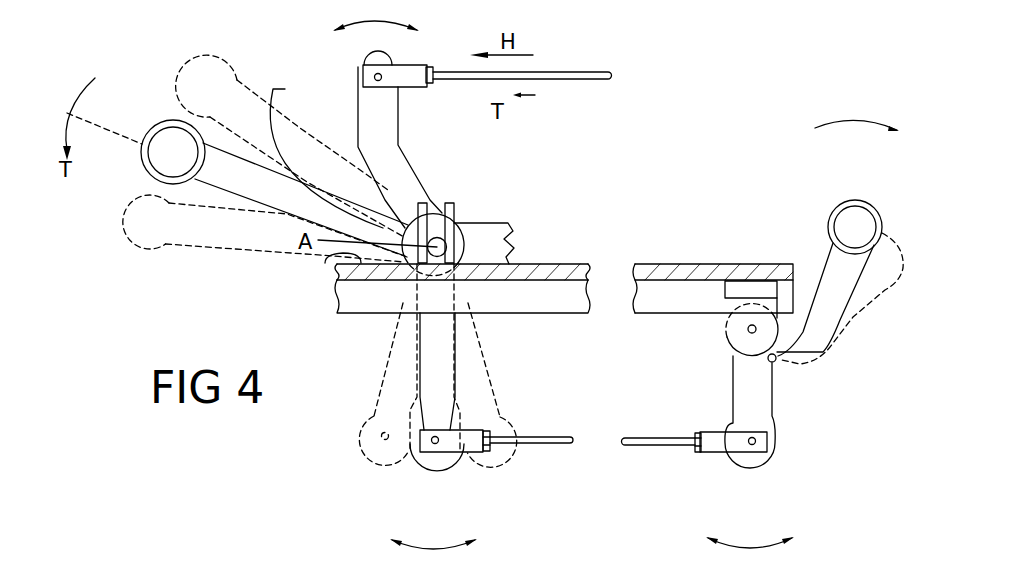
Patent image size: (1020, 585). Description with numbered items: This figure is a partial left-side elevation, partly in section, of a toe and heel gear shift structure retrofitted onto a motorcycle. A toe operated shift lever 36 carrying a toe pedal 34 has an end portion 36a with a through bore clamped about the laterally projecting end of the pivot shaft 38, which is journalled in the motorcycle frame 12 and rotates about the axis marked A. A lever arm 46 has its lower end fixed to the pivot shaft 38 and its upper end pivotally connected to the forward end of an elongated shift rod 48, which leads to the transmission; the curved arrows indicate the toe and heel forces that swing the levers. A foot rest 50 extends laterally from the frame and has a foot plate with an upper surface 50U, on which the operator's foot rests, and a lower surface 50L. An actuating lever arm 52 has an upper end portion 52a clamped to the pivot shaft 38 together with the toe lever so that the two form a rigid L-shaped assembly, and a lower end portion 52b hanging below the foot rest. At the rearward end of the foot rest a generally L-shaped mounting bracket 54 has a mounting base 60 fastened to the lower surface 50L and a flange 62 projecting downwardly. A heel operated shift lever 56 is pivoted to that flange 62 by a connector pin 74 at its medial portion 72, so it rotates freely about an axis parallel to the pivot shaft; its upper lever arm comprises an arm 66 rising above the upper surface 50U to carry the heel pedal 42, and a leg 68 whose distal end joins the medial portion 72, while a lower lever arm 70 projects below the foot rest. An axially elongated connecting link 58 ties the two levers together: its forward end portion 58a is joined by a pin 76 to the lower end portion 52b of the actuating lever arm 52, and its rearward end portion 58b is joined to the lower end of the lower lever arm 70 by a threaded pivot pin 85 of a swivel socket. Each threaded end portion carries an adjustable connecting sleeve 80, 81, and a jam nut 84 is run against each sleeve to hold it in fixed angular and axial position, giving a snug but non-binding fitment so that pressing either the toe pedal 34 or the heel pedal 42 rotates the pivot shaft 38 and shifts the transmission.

The motorcycle frame 12 is at (489, 224).
The toe pedal 34 is at (152, 127).
The toe operated shift lever 36 is at (203, 165).
The end portion of shift lever 36a is at (326, 152).
The pivot shaft 38 is at (442, 214).
The heel pedal 42 is at (829, 219).
The lever arm 46 is at (355, 128).
The shift rod 48 is at (563, 72).
The foot rest 50 is at (426, 285).
The upper surface of foot rest 50U is at (326, 258).
The lower surface of foot rest 50L is at (368, 300).
The actuating lever arm 52 is at (421, 367).
The upper end portion of actuating lever arm 52a is at (437, 294).
The lower end portion of actuating lever arm 52b is at (438, 412).
The mounting bracket 54 is at (718, 296).
The heel operated shift lever 56 is at (808, 174).
The connecting link 58 is at (592, 467).
The forward end portion of connecting link 58a is at (538, 437).
The rearward end portion of connecting link 58b is at (665, 440).
The mounting base 60 is at (747, 290).
The flange 62 is at (730, 307).
The arm of upper lever arm 66 is at (831, 295).
The leg of upper lever arm 68 is at (840, 268).
The lower lever arm 70 is at (753, 415).
The medial portion 72 is at (732, 363).
The connector pin 74 is at (750, 329).
The pin 76 is at (437, 445).
The connecting sleeve 80 is at (467, 445).
The connecting sleeve 81 is at (713, 447).
The jam nut 84 is at (488, 448).
The pivot pin 85 is at (753, 441).